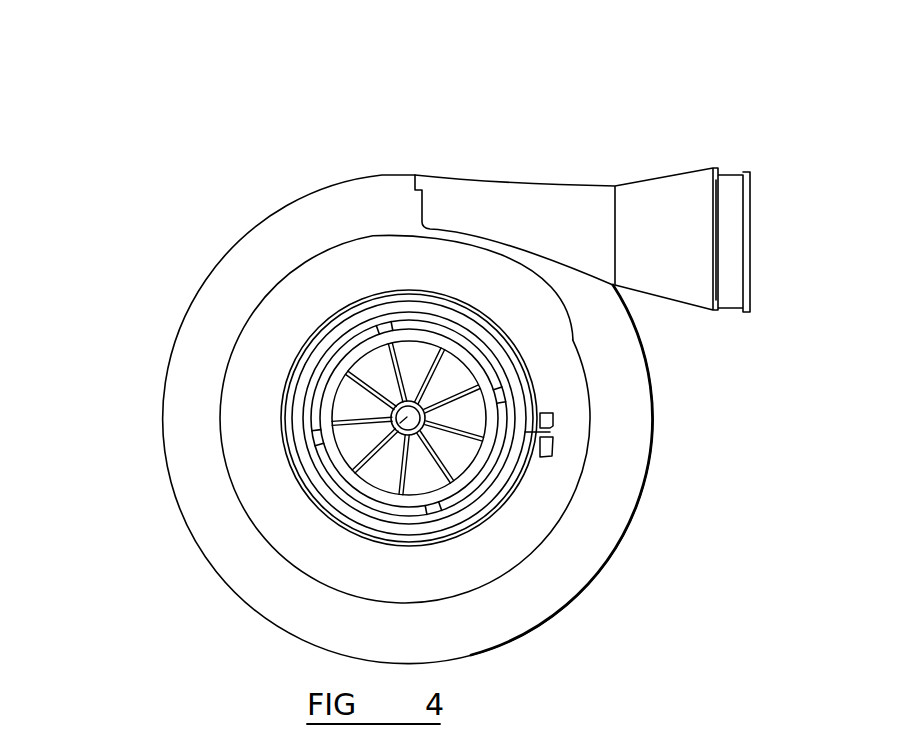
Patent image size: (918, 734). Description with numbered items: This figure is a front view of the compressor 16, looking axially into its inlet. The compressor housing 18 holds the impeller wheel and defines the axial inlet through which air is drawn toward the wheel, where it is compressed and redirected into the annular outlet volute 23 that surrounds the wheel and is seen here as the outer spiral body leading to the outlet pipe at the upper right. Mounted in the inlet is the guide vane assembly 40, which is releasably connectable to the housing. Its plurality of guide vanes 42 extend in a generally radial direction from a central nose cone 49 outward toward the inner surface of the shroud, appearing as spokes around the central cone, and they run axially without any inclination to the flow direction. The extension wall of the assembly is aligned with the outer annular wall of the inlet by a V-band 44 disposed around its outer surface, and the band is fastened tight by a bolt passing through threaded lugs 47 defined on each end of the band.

The compressor 16 is at (210, 242).
The compressor housing 18 is at (318, 552).
The annular outlet volute 23 is at (483, 193).
The guide vane assembly 40 is at (465, 473).
The guide vanes 42 is at (337, 392).
The V-band 44 is at (537, 470).
The threaded lugs 47 is at (550, 428).
The central nose cone 49 is at (358, 444).